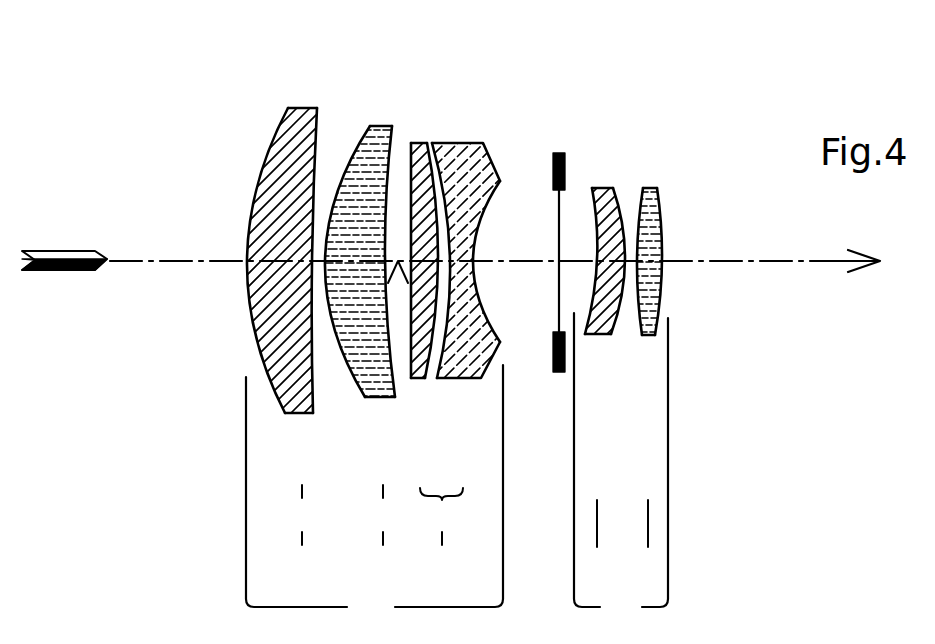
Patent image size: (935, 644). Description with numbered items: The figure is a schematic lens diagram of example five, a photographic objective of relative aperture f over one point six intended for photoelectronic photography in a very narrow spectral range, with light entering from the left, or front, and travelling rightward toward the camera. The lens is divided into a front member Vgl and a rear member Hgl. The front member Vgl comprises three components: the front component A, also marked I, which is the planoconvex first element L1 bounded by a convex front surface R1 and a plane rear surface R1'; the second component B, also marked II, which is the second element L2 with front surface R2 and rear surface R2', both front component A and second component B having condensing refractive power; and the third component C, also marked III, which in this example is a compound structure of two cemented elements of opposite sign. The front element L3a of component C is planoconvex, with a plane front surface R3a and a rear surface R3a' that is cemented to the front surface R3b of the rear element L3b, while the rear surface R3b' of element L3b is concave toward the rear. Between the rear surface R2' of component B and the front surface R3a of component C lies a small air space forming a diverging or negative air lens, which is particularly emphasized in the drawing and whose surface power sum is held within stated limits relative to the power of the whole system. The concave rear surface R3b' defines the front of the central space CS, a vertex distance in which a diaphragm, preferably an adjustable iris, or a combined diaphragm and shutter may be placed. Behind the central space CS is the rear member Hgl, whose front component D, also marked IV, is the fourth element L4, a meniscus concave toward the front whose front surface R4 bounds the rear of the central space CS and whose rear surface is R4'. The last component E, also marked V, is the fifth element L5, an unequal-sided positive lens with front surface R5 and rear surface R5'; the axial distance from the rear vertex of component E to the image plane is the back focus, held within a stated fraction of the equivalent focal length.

The first lens element L1 is at (271, 270).
The second lens element L2 is at (360, 245).
The front element of third component L3a is at (421, 255).
The rear element of third component L3b is at (493, 276).
The fourth lens element L4 is at (605, 266).
The fifth lens element L5 is at (664, 292).
The front surface radius of first element R1 is at (255, 244).
The rear surface radius of first element R1' is at (302, 234).
The front surface radius of second element R2 is at (347, 227).
The rear surface radius of second element R2' is at (365, 201).
The front surface radius of element 3a R3a is at (411, 219).
The rear surface radius of element 3a R3a' is at (432, 200).
The front surface radius of element 3b R3b is at (467, 222).
The rear surface radius of element 3b R3b' is at (513, 217).
The front surface radius of fourth element R4 is at (587, 228).
The rear surface radius of fourth element R4' is at (608, 202).
The front surface radius of fifth element R5 is at (643, 228).
The rear surface radius of fifth element R5' is at (678, 237).
The central space CS is at (520, 261).
The first component I is at (298, 515).
The second component II is at (384, 515).
The third component III is at (441, 516).
The fourth component IV is at (597, 507).
The fifth component V is at (645, 507).
The front component A is at (301, 564).
The second component B is at (386, 564).
The third component C is at (446, 564).
The front component of rear member D is at (597, 564).
The last component E is at (649, 564).
The front member Vgl is at (374, 494).
The rear member Hgl is at (621, 468).